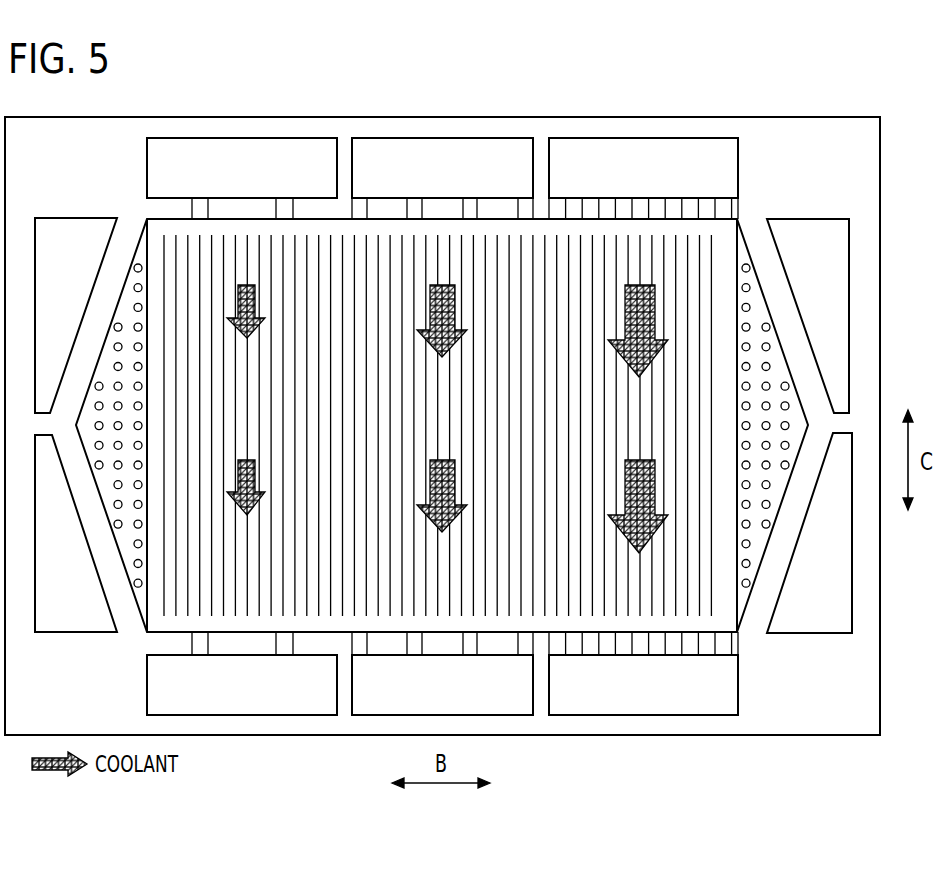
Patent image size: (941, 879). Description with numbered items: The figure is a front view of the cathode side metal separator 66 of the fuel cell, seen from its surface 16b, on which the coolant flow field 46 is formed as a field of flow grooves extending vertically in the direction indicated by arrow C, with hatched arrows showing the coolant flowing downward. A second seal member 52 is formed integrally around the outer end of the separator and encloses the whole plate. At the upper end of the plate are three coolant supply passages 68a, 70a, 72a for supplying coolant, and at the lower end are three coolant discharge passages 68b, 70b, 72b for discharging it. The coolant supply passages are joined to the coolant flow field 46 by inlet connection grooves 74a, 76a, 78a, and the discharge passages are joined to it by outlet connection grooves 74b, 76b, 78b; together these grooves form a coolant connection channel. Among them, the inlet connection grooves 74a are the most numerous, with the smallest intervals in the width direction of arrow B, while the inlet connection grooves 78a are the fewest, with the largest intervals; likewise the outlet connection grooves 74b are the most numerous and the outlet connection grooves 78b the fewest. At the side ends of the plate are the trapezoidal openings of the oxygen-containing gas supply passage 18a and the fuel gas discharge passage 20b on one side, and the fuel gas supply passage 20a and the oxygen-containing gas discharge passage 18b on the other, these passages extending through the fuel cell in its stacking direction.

The second seal member 52 is at (792, 117).
The cathode side metal separator 66 is at (232, 98).
The coolant flow field 46 is at (193, 253).
The surface 16b is at (793, 720).
The oxygen-containing gas supply passage 18a is at (808, 316).
The oxygen-containing gas discharge passage 18b is at (76, 533).
The fuel gas supply passage 20a is at (809, 533).
The fuel gas discharge passage 20b is at (76, 315).
The coolant supply passage 68a is at (643, 168).
The coolant discharge passage 68b is at (643, 685).
The coolant supply passage 70a is at (442, 178).
The coolant discharge passage 70b is at (442, 673).
The coolant supply passage 72a is at (242, 178).
The coolant discharge passage 72b is at (242, 673).
The inlet connection grooves 74a is at (590, 207).
The outlet connection grooves 74b is at (590, 648).
The inlet connection grooves 76a is at (417, 207).
The outlet connection grooves 76b is at (415, 648).
The inlet connection grooves 78a is at (200, 207).
The outlet connection grooves 78b is at (197, 649).